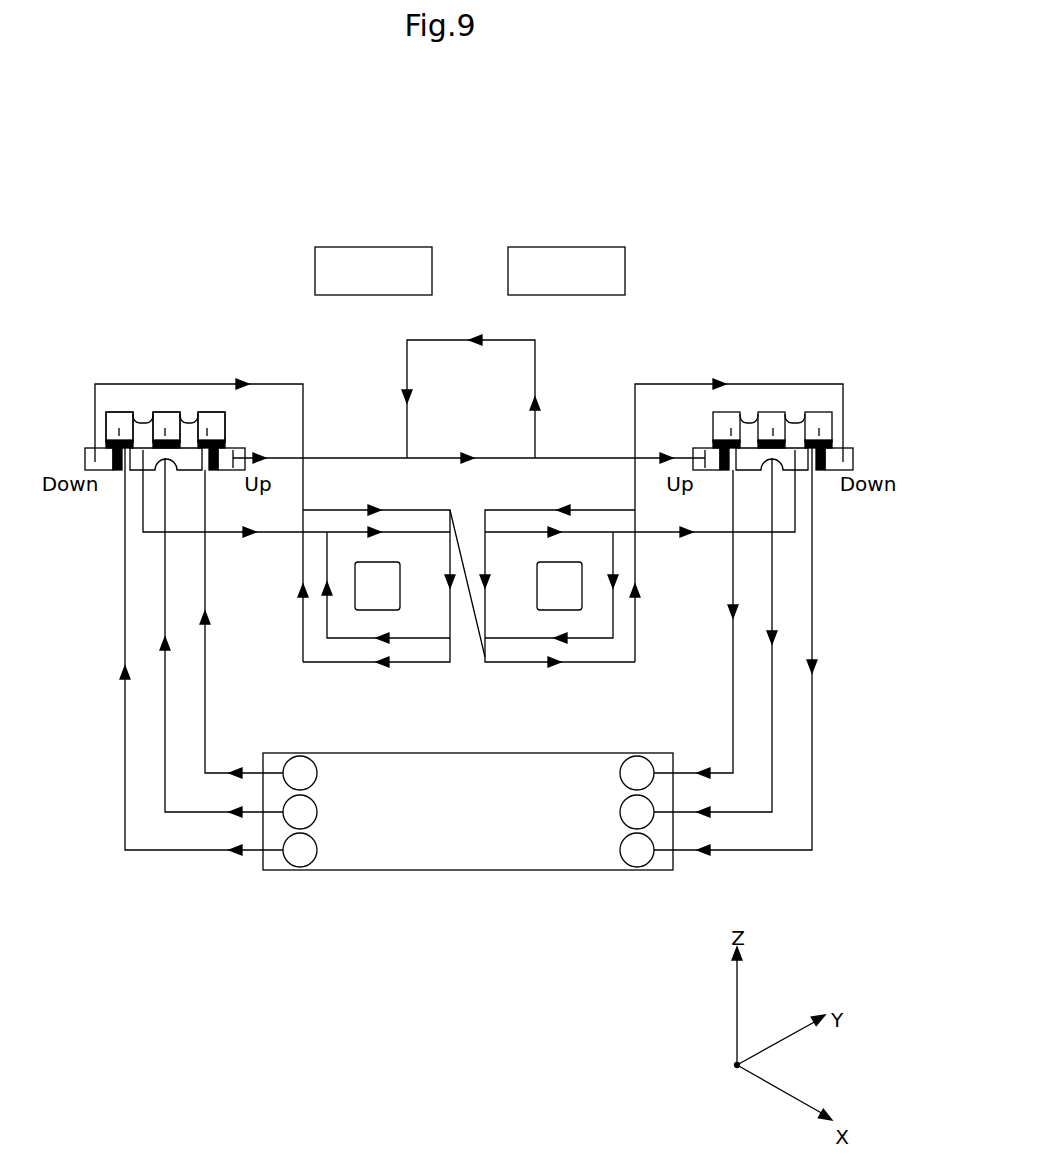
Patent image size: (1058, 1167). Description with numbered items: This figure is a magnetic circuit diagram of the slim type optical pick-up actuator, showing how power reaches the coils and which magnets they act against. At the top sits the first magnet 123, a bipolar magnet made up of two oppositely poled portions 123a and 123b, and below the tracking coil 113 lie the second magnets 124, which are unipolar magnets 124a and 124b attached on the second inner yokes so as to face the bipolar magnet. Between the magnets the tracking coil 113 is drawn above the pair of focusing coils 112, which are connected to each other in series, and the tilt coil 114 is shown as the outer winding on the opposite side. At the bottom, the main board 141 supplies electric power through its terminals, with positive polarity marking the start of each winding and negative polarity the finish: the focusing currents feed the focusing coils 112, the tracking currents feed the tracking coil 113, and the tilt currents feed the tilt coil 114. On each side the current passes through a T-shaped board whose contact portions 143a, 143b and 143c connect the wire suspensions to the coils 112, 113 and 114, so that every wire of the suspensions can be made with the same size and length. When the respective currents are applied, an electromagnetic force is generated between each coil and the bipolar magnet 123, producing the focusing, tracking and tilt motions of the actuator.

The first magnet 123 is at (385, 153).
The bipolar magnet pole portion 123a is at (567, 247).
The bipolar magnet pole portion 123b is at (373, 247).
The tracking coil 113 is at (407, 367).
The contact portion 143a is at (120, 412).
The contact portion 143b is at (213, 412).
The contact portion 143c is at (165, 412).
The focusing coils 112 is at (303, 633).
The tilt coil 114 is at (613, 620).
The second magnets 124 is at (418, 712).
The unipolar magnet 124a is at (537, 600).
The unipolar magnet 124b is at (400, 600).
The main board 141 is at (393, 872).